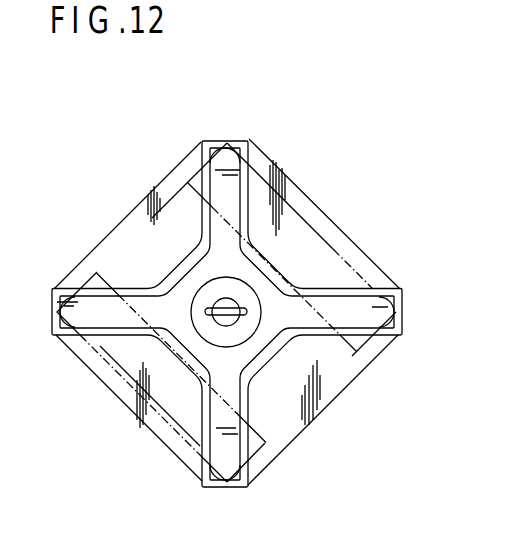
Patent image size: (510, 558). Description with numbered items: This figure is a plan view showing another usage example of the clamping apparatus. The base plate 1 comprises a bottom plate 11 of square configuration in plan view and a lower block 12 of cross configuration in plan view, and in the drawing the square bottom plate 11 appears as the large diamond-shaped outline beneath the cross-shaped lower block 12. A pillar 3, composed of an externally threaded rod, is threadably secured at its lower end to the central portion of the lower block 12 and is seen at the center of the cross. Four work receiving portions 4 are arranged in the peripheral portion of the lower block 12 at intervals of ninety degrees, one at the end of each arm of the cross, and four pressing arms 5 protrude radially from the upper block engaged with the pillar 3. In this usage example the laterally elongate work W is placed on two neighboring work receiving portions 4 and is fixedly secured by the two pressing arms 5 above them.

The base plate 1 is at (417, 403).
The pillar 3 is at (217, 297).
The work receiving portion 4 is at (249, 145).
The pressing arm 5 is at (208, 170).
The bottom plate 11 is at (334, 376).
The lower block 12 is at (248, 402).
The work W is at (292, 238).